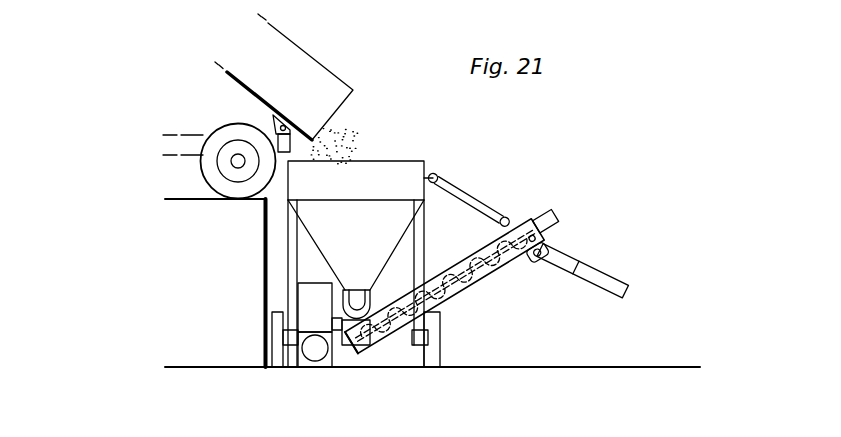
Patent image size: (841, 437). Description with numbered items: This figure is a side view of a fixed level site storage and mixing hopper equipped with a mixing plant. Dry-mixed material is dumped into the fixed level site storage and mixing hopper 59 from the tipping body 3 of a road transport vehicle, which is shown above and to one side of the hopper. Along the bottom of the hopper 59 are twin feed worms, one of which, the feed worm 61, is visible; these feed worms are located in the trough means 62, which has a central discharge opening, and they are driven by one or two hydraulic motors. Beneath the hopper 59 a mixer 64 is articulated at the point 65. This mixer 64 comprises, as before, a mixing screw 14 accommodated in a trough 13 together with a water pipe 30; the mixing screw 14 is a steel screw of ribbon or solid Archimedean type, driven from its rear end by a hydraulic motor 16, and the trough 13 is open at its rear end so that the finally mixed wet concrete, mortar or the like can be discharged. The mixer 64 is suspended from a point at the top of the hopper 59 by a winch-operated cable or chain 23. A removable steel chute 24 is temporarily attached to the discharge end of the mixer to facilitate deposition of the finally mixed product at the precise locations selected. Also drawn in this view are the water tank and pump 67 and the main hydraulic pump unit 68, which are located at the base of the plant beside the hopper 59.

The tipping body 3 is at (340, 95).
The fixed level site storage and mixing hopper 59 is at (390, 170).
The winch-operated cable or chain 23 is at (463, 192).
The hydraulic motor 16 is at (538, 217).
The feed worm 61 is at (357, 283).
The trough means 62 is at (384, 296).
The water tank and pump 67 is at (313, 293).
The main hydraulic pump unit 68 is at (315, 355).
The articulation point 65 is at (337, 350).
The water pipe 30 is at (372, 353).
The trough 13 is at (452, 300).
The mixing screw 14 is at (480, 273).
The mixer 64 is at (517, 265).
The removable steel chute 24 is at (563, 274).